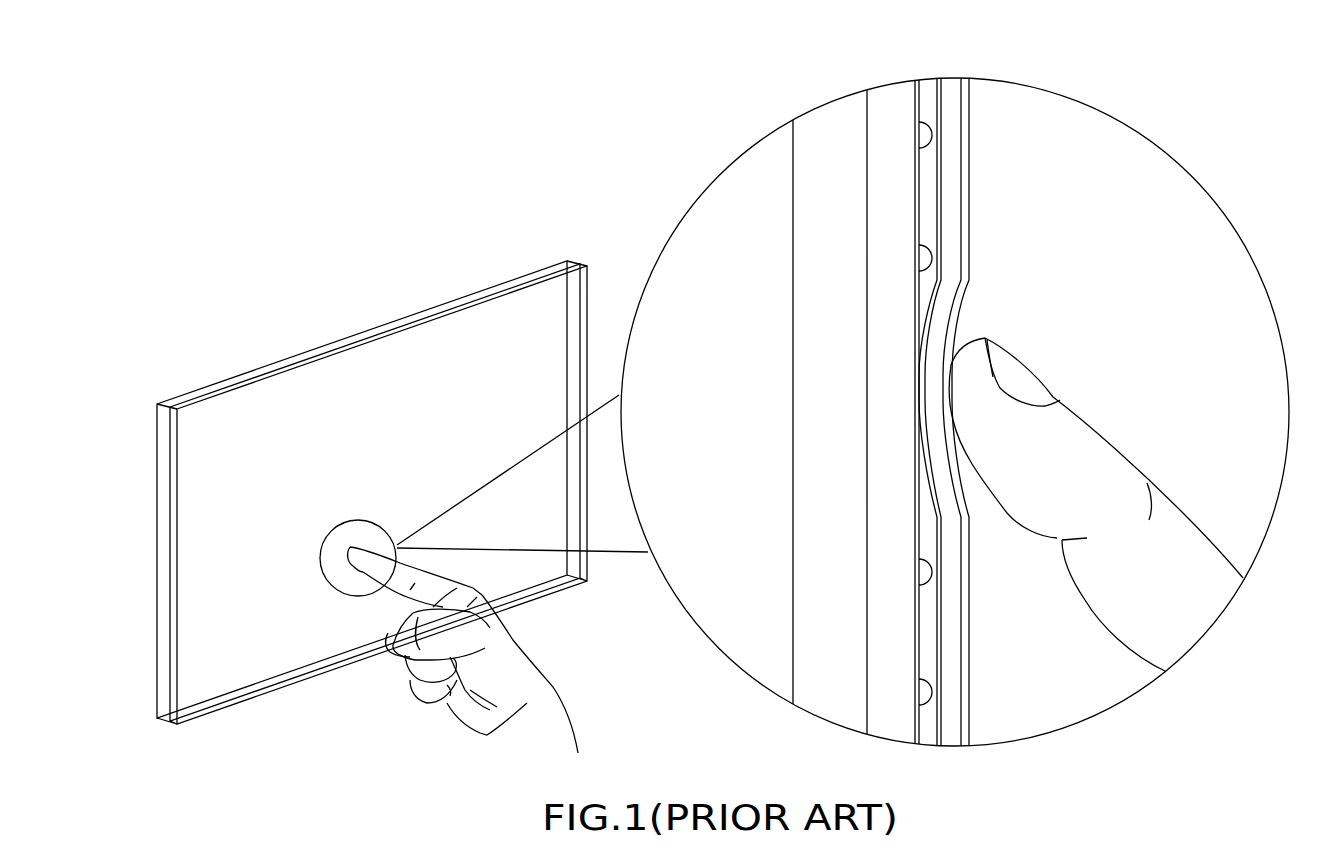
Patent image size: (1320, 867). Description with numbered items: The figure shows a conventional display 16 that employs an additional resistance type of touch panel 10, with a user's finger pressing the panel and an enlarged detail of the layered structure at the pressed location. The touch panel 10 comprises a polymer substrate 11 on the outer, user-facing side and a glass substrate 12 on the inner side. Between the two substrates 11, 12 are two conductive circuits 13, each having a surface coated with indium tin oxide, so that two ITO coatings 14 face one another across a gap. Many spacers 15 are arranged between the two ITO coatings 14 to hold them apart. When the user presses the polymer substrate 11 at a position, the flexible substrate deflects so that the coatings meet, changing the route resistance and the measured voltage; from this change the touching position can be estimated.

The touch panel 10 is at (263, 415).
The polymer substrate 11 is at (965, 115).
The glass substrate 12 is at (820, 190).
The conductive circuit 13 is at (882, 97).
The indium tin oxide (ITO) coating 14 is at (915, 78).
The spacer 15 is at (923, 137).
The display 16 is at (178, 398).